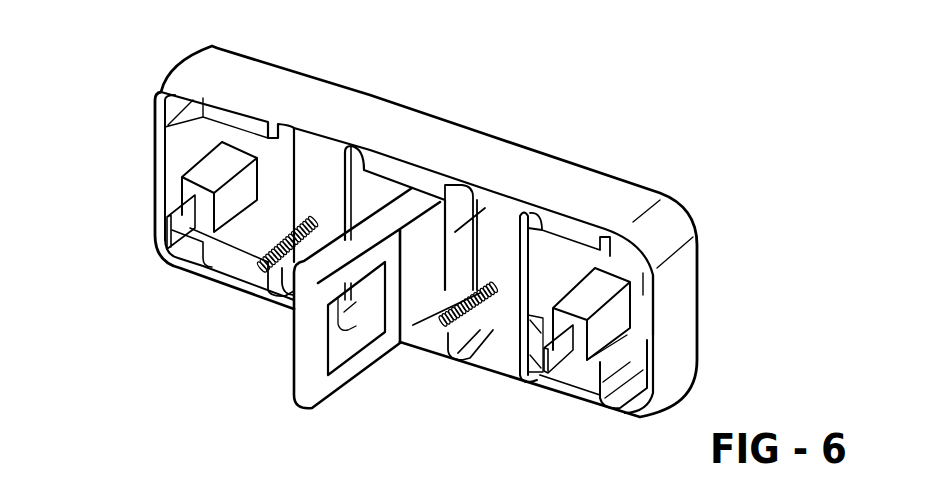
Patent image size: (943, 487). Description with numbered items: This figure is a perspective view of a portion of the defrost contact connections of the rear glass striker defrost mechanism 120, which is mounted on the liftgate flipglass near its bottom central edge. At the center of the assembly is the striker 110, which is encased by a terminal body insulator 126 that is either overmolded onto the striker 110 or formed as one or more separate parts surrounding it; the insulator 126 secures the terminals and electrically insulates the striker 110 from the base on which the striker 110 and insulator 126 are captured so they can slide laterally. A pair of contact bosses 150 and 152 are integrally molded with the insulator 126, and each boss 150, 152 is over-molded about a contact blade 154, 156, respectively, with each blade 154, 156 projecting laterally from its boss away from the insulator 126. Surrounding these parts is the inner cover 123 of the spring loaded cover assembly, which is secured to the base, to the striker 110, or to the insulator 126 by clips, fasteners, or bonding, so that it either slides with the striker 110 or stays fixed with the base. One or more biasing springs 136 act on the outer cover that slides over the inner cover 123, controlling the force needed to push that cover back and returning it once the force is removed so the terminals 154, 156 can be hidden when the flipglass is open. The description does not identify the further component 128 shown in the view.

The striker 110 is at (295, 361).
The rear glass striker defrost mechanism 120 is at (700, 185).
The inner cover 123 is at (213, 75).
The terminal body insulator 126 is at (462, 228).
The end wall of housing 128 is at (152, 164).
The biasing spring 136 is at (250, 265).
The contact boss 150 is at (182, 197).
The contact boss 152 is at (603, 336).
The contact blade 154 is at (170, 232).
The contact blade 156 is at (552, 357).